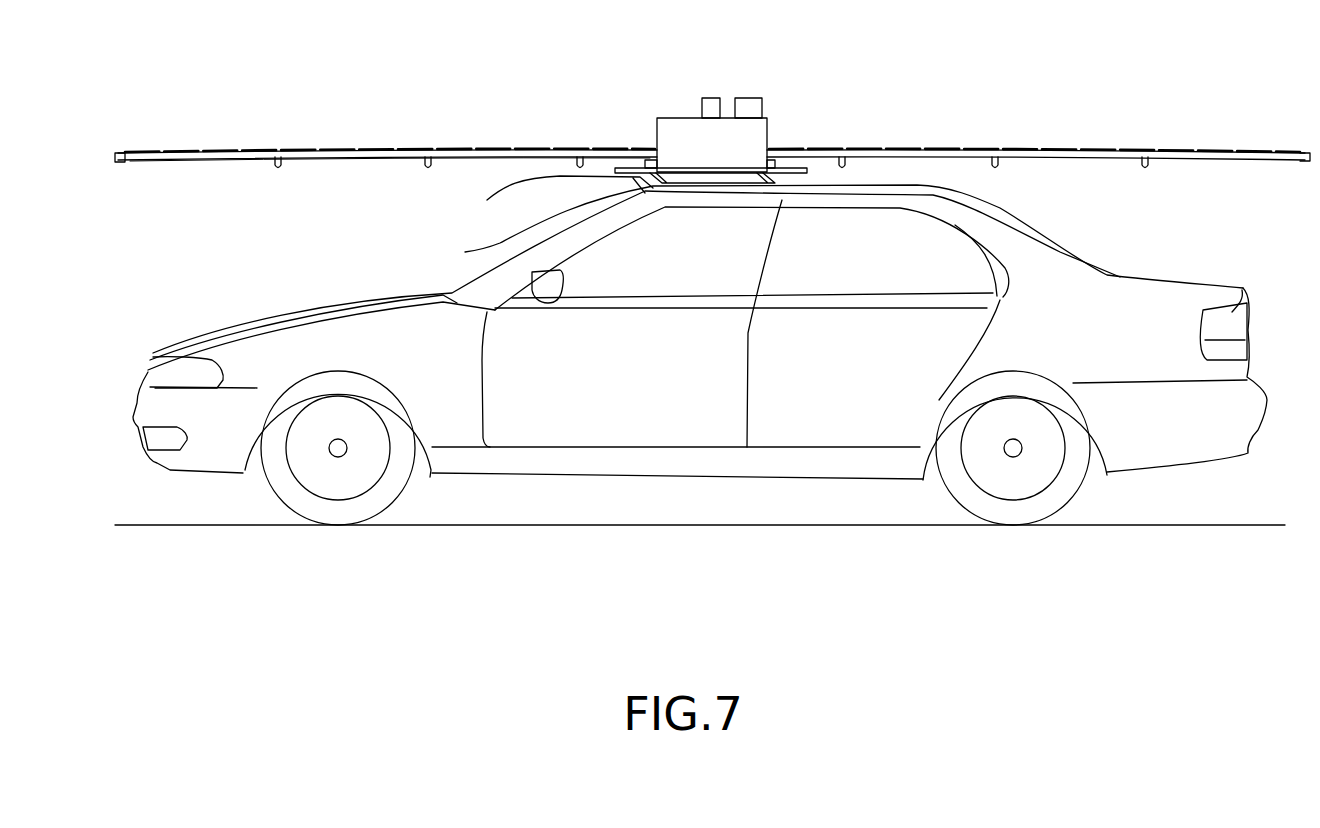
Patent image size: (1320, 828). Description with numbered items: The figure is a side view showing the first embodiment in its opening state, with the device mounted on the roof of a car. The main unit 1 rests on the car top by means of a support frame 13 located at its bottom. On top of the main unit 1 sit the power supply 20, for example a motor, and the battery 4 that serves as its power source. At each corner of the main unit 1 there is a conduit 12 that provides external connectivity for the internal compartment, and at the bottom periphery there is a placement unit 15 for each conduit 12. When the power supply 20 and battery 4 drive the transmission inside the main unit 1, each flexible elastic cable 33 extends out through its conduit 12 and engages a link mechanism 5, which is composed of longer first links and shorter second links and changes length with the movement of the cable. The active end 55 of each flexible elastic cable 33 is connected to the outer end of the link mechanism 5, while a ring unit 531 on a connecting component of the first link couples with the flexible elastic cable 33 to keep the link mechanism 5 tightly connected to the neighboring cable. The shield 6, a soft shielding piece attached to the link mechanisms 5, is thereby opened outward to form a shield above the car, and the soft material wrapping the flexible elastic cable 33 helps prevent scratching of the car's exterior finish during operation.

The main unit 1 is at (688, 117).
The battery 4 is at (748, 98).
The power supply 20 is at (708, 98).
The conduit 12 is at (650, 163).
The link mechanism 5 is at (452, 150).
The shield 6 is at (521, 148).
The flexible elastic cable 33 is at (425, 162).
The ring unit 531 is at (428, 166).
The active end 55 is at (118, 163).
The placement unit 15 is at (554, 201).
The support frame 13 is at (838, 236).